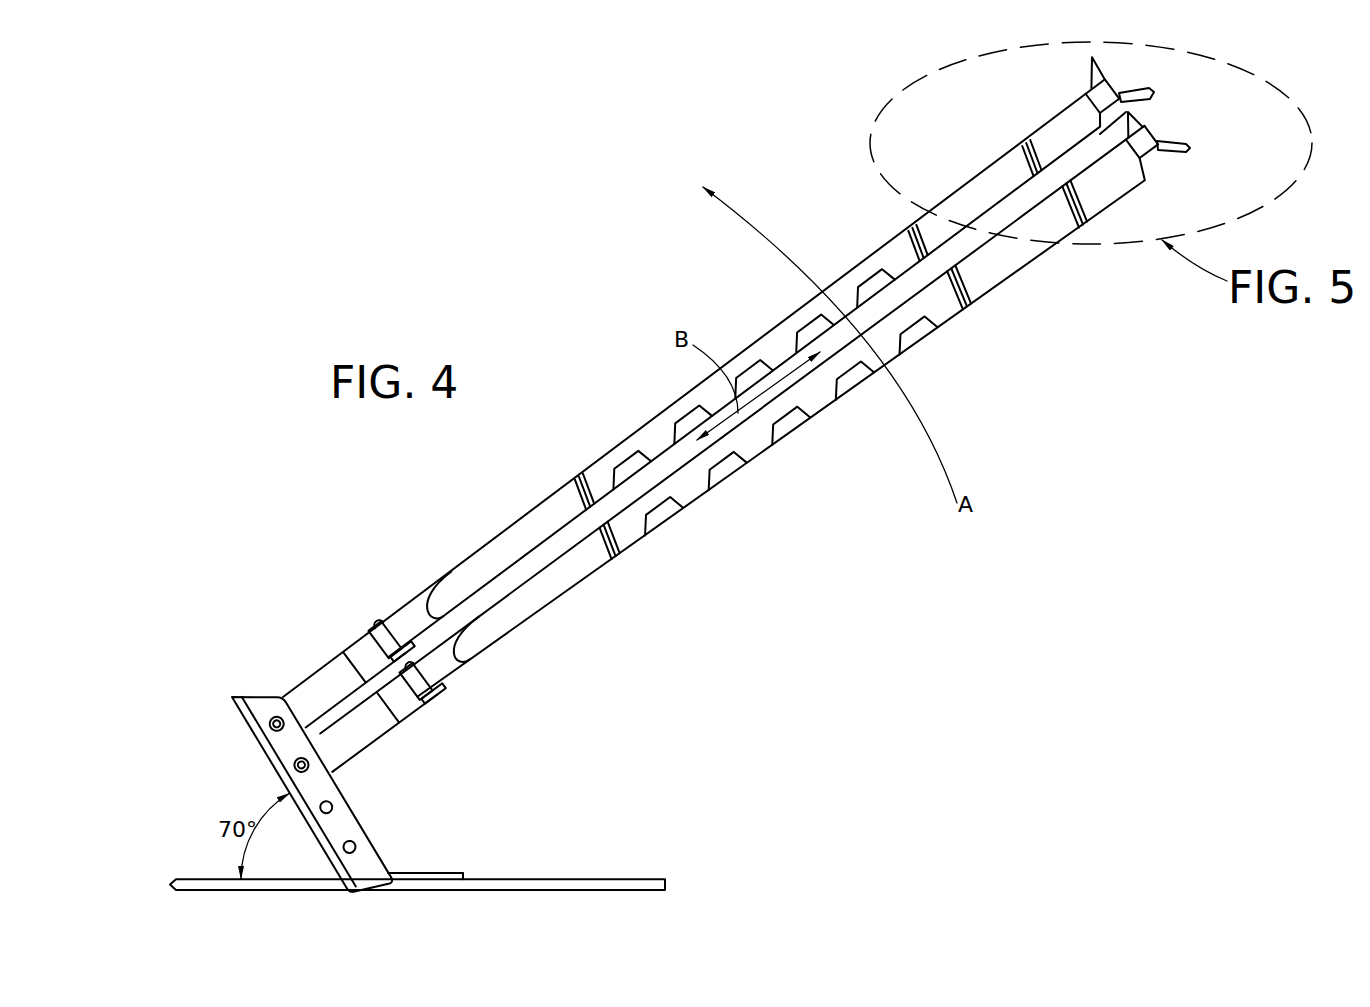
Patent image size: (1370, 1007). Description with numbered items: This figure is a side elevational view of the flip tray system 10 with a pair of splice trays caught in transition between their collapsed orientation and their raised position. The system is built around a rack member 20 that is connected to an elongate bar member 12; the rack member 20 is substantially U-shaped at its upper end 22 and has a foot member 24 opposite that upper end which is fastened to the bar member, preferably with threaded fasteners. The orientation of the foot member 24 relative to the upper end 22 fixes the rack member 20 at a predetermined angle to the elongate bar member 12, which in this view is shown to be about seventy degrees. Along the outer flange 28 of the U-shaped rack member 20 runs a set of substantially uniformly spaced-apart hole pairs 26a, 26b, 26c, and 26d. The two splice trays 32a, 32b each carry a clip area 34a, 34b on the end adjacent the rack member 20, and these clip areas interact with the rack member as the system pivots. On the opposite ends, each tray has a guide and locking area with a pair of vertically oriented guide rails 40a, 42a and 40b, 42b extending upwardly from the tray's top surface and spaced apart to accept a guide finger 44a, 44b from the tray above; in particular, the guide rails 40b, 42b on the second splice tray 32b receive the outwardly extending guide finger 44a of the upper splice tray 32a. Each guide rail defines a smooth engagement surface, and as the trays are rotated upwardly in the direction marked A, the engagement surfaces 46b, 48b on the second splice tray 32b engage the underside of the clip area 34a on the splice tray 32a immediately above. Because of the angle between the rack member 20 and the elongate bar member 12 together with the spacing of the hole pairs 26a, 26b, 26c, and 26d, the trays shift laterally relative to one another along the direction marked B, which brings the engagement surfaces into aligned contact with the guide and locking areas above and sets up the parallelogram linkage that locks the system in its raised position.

The flip tray system 10 is at (632, 368).
The elongate bar member 12 is at (626, 878).
The rack member 20 is at (248, 692).
The upper end 22 is at (236, 728).
The foot member 24 is at (478, 868).
The hole pair 26a is at (278, 714).
The hole pair 26b is at (311, 765).
The hole pair 26c is at (333, 806).
The hole pair 26d is at (357, 847).
The outer flange 28 is at (281, 745).
The splice tray 32a is at (533, 525).
The splice tray 32b is at (557, 580).
The clip area 34a is at (1124, 82).
The clip area 34b is at (1175, 172).
The guide rail 40a is at (1038, 76).
The guide rail 42a is at (1089, 68).
The guide rail 40b is at (1206, 123).
The guide rail 42b is at (1152, 120).
The guide finger 44a is at (1161, 90).
The guide finger 44b is at (1191, 149).
The engagement surface 46b is at (1020, 126).
The engagement surface 48b is at (1102, 129).